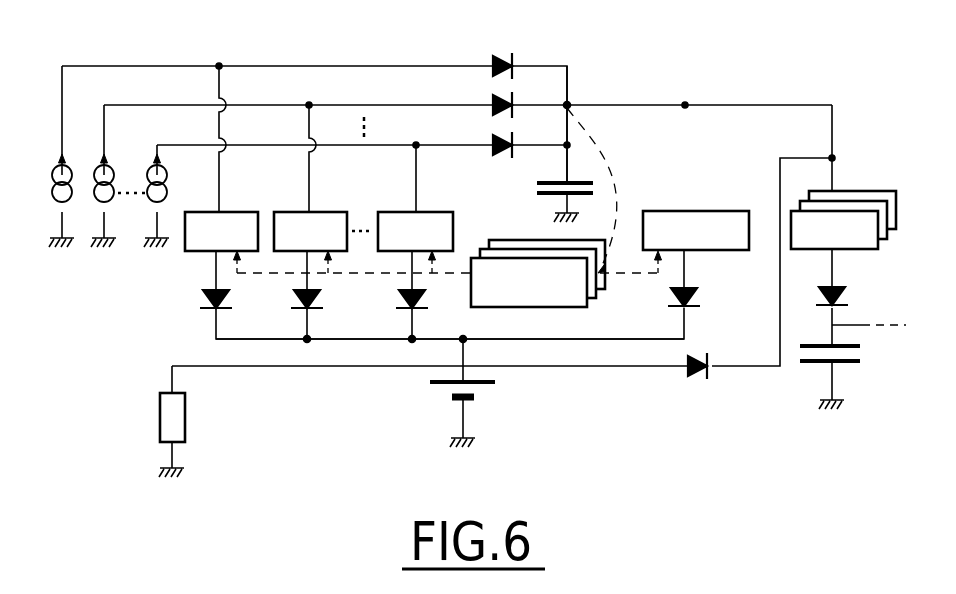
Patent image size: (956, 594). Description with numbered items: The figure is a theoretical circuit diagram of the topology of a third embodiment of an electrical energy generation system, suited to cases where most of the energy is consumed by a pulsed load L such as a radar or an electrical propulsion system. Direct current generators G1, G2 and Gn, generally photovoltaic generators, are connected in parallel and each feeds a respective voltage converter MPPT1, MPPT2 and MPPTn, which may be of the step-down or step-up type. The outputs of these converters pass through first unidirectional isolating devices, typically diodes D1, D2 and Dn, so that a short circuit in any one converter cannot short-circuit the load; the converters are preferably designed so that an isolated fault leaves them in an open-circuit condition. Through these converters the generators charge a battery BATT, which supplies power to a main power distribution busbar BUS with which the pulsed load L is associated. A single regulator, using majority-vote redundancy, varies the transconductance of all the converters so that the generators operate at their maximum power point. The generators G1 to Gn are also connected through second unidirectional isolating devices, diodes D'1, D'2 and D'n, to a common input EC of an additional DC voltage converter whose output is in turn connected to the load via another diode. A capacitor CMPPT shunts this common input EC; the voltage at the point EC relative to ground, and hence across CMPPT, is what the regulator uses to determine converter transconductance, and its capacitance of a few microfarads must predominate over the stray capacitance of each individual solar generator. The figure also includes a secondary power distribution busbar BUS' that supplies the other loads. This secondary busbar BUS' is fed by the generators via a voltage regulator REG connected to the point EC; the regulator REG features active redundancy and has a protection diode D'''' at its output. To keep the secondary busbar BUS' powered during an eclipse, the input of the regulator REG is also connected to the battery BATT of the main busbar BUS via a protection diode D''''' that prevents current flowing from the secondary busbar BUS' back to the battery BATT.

The direct current generator G1 is at (80, 172).
The direct current generator G2 is at (121, 172).
The direct current generator Gn is at (174, 174).
The voltage converter MPPT1 is at (221, 231).
The voltage converter MPPT2 is at (310, 231).
The voltage converter MPPTn is at (415, 231).
The voltage regulator REG is at (843, 220).
The second unidirectional isolating device D'1 is at (483, 51).
The second unidirectional isolating device D'2 is at (472, 94).
The second unidirectional isolating device D'n is at (474, 135).
The first unidirectional isolating device D1 is at (212, 298).
The first unidirectional isolating device D2 is at (302, 298).
The first unidirectional isolating device Dn is at (408, 298).
The protection diode D'''' is at (859, 292).
The protection diode D''''' is at (679, 381).
The capacitor CMPPT is at (548, 196).
The common input EC is at (567, 105).
The secondary power distribution busbar BUS' is at (823, 371).
The battery BATT is at (445, 400).
The pulsed load L is at (162, 421).
The main power distribution busbar BUS is at (450, 381).